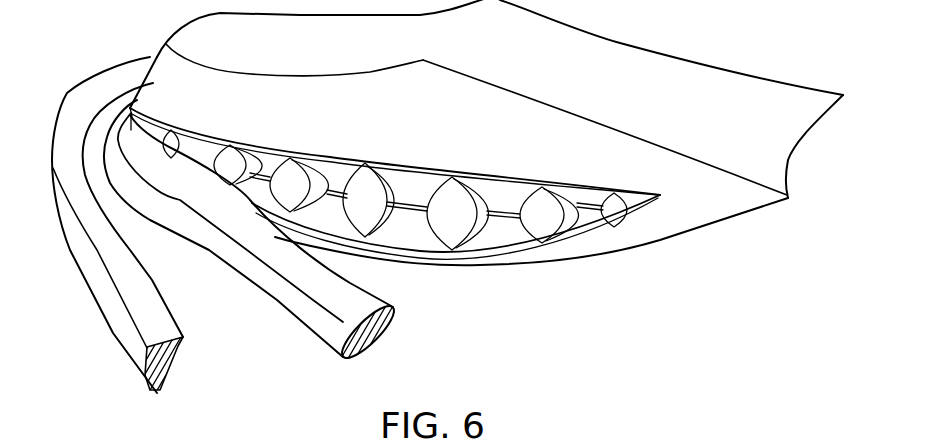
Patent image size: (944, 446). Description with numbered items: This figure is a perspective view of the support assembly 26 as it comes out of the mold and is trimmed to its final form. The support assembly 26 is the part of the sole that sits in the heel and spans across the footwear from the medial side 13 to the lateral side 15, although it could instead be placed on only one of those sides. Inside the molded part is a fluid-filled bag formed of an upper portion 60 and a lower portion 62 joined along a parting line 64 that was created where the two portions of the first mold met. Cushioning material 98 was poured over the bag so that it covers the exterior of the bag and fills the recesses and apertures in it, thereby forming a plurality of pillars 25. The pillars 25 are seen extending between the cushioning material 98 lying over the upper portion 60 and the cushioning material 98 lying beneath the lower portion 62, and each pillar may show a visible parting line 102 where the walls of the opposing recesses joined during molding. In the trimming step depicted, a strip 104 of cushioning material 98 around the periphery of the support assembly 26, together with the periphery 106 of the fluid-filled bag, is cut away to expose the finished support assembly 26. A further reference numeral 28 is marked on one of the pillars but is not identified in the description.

The medial side 13 is at (781, 75).
The lateral side 15 is at (706, 201).
The pillars 25 is at (388, 177).
The support assembly 26 is at (660, 42).
The roller 28 is at (538, 237).
The upper portion 60 is at (363, 297).
The lower portion 62 is at (231, 263).
The parting line 64 is at (203, 220).
The cushioning material 98 is at (271, 119).
The parting line 102 is at (434, 174).
The strip 104 is at (127, 333).
The periphery 106 is at (293, 300).